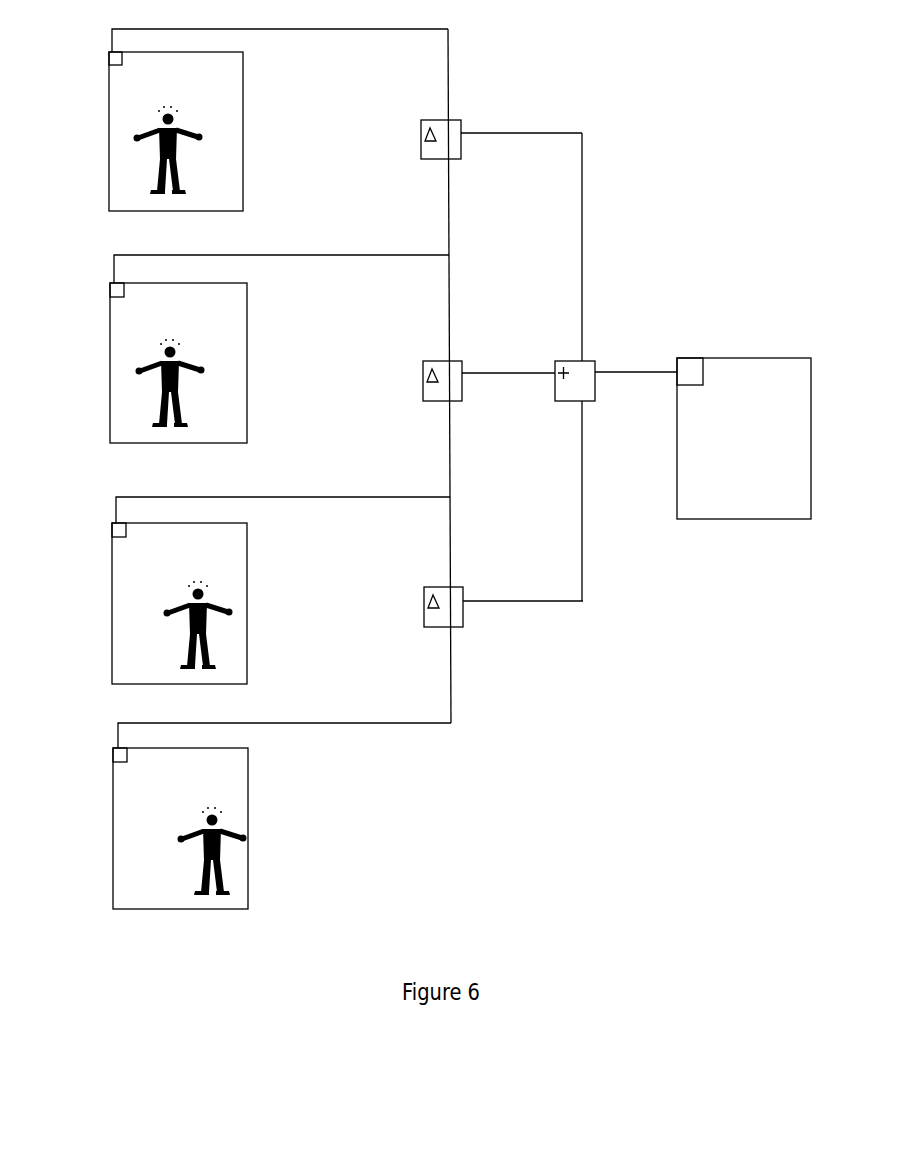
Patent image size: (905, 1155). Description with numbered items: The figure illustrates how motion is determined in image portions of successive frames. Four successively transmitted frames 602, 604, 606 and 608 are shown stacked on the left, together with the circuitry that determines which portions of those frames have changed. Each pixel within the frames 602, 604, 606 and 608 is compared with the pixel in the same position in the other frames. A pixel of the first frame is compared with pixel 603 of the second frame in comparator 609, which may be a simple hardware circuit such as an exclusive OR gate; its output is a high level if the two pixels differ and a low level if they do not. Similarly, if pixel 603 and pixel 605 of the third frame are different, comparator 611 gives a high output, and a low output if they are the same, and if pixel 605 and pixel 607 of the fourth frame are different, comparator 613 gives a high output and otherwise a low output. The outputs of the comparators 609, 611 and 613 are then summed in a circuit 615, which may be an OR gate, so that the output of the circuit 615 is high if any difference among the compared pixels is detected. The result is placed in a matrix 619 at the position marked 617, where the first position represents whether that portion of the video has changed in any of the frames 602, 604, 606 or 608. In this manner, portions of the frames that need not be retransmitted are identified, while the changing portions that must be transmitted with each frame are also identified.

The frame 602 is at (176, 131).
The pixel 603 is at (112, 283).
The frame 604 is at (178, 363).
The pixel 605 is at (113, 523).
The frame 606 is at (179, 603).
The pixel 607 is at (115, 748).
The frame 608 is at (180, 828).
The comparator 609 is at (461, 120).
The comparator 611 is at (462, 361).
The comparator 613 is at (463, 587).
The circuit 615 is at (595, 401).
The reference marker of output frame 617 is at (690, 372).
The matrix 619 is at (744, 438).